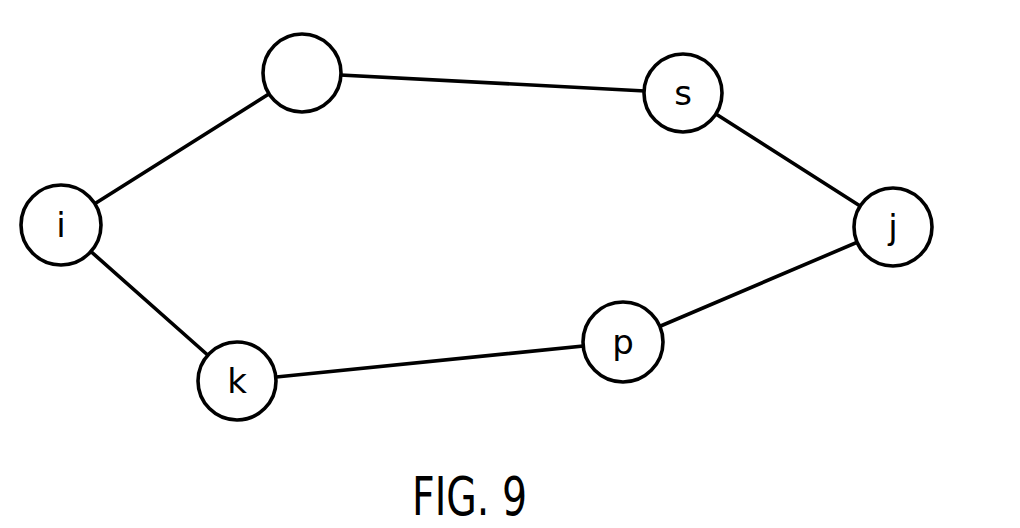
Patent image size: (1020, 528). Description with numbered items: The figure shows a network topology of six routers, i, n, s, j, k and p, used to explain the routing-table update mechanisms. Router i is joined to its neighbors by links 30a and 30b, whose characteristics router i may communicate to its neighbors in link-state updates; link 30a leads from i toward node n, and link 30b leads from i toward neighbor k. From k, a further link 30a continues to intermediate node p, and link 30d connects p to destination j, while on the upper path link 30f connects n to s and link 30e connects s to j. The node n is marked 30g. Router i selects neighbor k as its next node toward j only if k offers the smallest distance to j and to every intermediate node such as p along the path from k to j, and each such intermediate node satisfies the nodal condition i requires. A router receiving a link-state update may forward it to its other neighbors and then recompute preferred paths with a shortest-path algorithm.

The link 30a is at (163, 153).
The link 30b is at (165, 308).
The link 30d is at (728, 302).
The link 30e is at (787, 155).
The link 30f is at (460, 77).
The node 30g is at (303, 112).